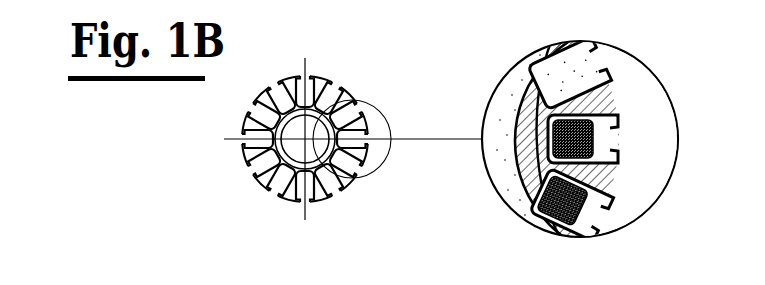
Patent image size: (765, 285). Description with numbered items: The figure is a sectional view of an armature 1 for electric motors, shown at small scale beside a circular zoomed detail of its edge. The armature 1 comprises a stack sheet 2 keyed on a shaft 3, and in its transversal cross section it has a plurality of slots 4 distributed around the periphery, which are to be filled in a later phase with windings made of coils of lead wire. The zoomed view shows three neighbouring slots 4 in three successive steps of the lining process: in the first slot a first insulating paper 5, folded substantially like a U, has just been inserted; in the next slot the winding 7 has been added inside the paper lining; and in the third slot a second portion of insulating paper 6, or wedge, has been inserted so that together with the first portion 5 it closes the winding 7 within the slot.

The armature 1 is at (370, 77).
The stack sheet 2 is at (325, 82).
The shaft 3 is at (495, 127).
The slot 4 is at (558, 72).
The first insulating paper 5 is at (585, 88).
The second portion of insulating paper 6 is at (596, 216).
The winding 7 is at (593, 137).